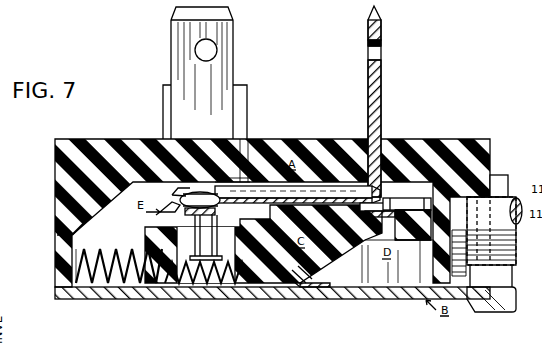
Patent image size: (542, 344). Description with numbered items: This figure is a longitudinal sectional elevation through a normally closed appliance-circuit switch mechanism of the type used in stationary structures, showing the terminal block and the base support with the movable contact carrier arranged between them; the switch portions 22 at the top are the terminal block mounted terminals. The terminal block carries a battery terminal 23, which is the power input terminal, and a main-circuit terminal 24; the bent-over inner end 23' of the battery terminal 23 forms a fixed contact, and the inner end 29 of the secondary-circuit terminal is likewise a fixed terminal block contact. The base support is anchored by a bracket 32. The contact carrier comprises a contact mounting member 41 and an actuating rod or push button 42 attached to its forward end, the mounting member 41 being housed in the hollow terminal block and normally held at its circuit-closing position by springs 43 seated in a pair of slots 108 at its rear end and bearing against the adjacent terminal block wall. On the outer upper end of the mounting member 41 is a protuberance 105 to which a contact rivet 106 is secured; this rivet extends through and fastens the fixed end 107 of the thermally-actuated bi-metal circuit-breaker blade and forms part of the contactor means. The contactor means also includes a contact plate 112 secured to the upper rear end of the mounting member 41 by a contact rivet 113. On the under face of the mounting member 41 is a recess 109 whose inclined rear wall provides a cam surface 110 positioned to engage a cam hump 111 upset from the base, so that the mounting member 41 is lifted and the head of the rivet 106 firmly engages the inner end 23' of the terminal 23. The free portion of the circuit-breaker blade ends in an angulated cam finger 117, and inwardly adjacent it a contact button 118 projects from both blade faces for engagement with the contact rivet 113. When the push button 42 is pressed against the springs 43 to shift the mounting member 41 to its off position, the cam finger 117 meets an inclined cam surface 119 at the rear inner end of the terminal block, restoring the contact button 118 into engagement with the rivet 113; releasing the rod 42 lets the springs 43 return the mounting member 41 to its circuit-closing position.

The switch housing 22 is at (100, 0).
The main-circuit terminal 24 is at (230, 78).
The battery terminal 23 is at (391, 101).
The inner end of battery terminal 23' is at (396, 162).
The inner end of secondary-circuit terminal 29 is at (222, 182).
The contact mounting member 41 is at (150, 232).
The springs 43 is at (108, 287).
The protuberance 105 is at (470, 197).
The contact rivet 106 is at (420, 180).
The fixed end of circuit-breaker 107 is at (438, 200).
The slots 108 is at (276, 204).
The recess 109 is at (388, 283).
The cam surface 110 is at (330, 288).
The cam hump 111 is at (303, 292).
The contact plate 112 is at (243, 287).
The contact rivet 113 is at (203, 287).
The cam finger 117 is at (166, 208).
The contact button 118 is at (184, 198).
The inclined cam surface 119 is at (75, 223).
The actuating rod 42 is at (512, 278).
The bracket 32 is at (512, 312).